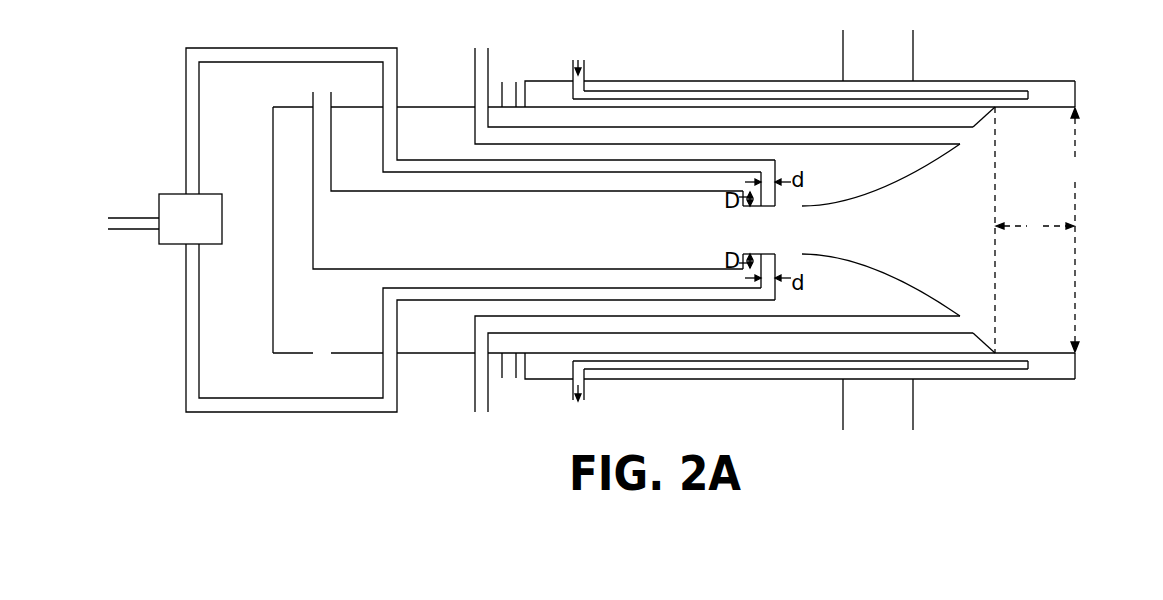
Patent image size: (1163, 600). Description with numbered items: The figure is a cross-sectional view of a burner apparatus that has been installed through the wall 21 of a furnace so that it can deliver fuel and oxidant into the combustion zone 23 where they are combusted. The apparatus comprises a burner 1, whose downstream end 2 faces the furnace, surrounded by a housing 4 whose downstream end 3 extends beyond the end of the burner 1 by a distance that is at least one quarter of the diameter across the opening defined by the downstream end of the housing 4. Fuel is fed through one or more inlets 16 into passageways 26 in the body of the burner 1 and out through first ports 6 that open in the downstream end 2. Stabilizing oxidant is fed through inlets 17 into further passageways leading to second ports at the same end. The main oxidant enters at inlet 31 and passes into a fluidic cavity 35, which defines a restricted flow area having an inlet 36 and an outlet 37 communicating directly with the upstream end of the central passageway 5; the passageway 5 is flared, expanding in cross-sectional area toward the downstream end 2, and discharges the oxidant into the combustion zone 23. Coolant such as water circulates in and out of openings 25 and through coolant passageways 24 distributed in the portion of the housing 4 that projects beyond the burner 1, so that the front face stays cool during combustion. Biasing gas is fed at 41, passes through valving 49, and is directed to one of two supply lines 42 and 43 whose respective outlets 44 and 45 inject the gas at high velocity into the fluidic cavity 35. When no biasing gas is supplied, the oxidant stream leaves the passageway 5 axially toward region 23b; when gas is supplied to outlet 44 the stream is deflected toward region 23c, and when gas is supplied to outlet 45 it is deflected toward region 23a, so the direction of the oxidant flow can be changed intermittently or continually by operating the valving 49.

The burner 1 is at (273, 140).
The downstream end of burner 2 is at (998, 230).
The downstream end of housing 3 is at (1075, 94).
The housing 4 is at (768, 398).
The central passageway 5 is at (871, 230).
The first ports 6 is at (883, 231).
The inlets 16 is at (718, 235).
The inlets 17 is at (508, 233).
The wall 21 is at (878, 230).
The combustion zone 23 is at (1079, 230).
The region 23a is at (1095, 115).
The region 23b is at (1100, 233).
The region 23c is at (1095, 348).
The coolant passageways 24 is at (721, 97).
The openings 25 is at (593, 237).
The passageways 26 is at (673, 232).
The inlet 31 is at (526, 170).
The fluidic cavity 35 is at (756, 229).
The inlet 36 is at (737, 234).
The outlet 37 is at (776, 237).
The biasing gas source 41 is at (132, 209).
The supply line 42 is at (463, 117).
The supply line 43 is at (479, 343).
The outlet 44 is at (768, 205).
The outlet 45 is at (768, 256).
The valving 49 is at (190, 219).